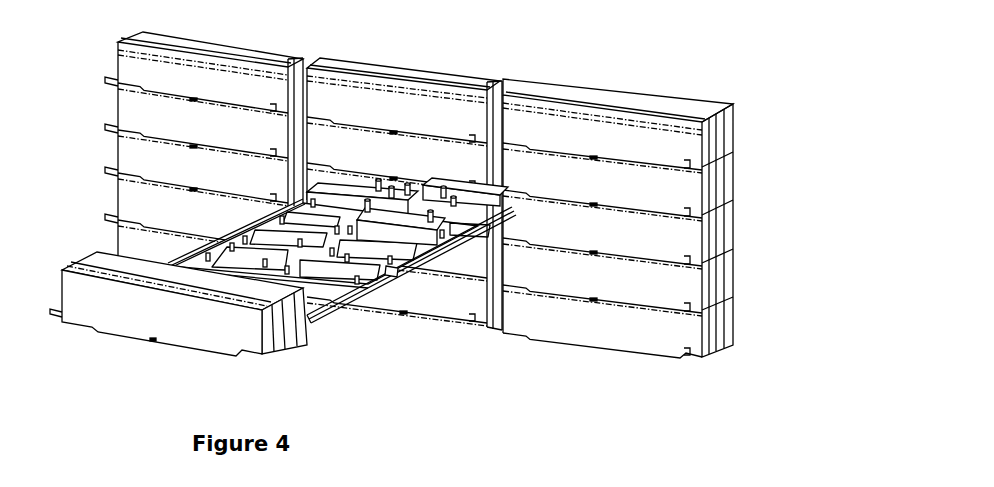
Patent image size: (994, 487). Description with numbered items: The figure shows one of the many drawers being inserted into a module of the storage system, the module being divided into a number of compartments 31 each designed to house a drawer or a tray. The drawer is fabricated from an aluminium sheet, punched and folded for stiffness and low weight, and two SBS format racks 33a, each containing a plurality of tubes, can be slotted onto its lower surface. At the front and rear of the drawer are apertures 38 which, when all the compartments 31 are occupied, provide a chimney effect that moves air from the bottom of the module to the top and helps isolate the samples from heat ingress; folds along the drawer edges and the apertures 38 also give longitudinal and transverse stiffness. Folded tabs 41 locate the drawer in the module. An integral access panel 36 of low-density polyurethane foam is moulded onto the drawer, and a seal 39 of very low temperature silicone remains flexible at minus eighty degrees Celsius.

The compartment 31 is at (751, 219).
The rack 33a is at (420, 215).
The access panel 36 is at (273, 355).
The aperture 38 is at (343, 297).
The seal 39 is at (322, 300).
The folded tab 41 is at (393, 272).